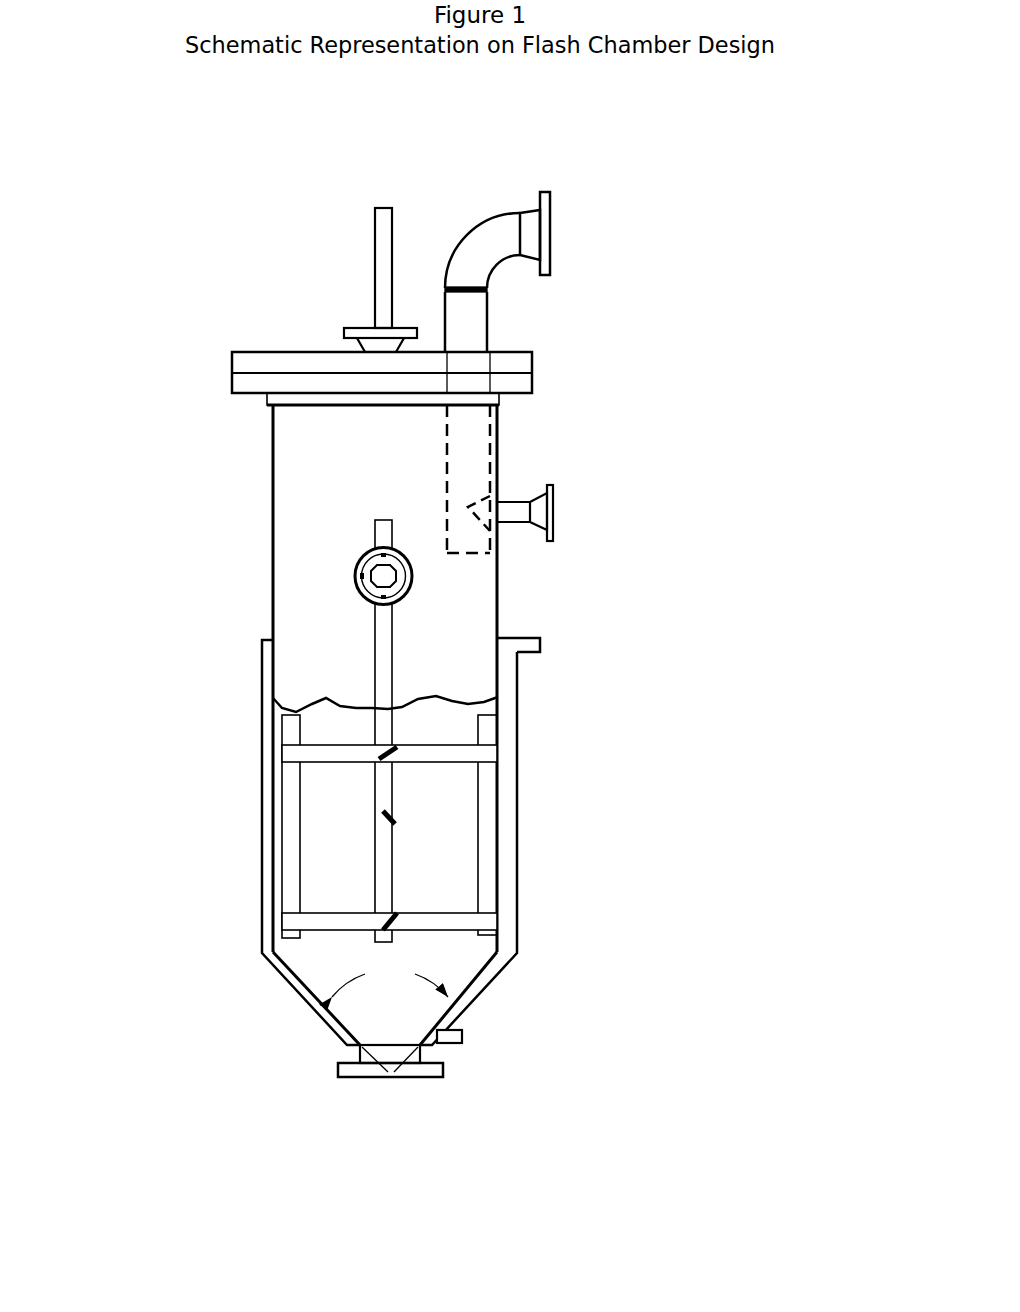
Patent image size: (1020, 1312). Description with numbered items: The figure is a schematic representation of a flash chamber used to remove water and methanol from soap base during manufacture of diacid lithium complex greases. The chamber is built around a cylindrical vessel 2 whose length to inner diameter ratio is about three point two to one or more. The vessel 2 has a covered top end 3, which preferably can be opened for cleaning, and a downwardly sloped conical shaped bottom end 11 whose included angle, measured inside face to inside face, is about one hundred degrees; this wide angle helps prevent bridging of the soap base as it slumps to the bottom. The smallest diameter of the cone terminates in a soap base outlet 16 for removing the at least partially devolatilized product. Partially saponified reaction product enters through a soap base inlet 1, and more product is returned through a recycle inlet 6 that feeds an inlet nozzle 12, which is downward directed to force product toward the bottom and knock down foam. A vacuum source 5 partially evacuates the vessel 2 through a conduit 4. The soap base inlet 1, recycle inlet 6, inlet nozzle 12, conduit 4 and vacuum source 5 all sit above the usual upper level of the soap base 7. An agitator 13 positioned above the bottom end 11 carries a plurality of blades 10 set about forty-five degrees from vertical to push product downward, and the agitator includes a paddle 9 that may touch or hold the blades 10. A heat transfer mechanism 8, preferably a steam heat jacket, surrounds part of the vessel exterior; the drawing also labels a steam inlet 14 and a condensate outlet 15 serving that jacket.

The soap base inlet 1 is at (397, 577).
The cylindrical vessel 2 is at (322, 613).
The covered top end 3 is at (400, 382).
The conduit 4 is at (465, 450).
The vacuum source 5 is at (550, 233).
The recycle inlet 6 is at (556, 512).
The upper level of the soap base 7 is at (327, 698).
The heat transfer mechanism 8 is at (508, 892).
The paddle 9 is at (333, 922).
The blades 10 is at (390, 921).
The conical shaped bottom end 11 is at (362, 1015).
The inlet nozzle 12 is at (460, 505).
The agitator 13 is at (378, 290).
The steam inlet 14 is at (542, 645).
The condensate outlet 15 is at (462, 1037).
The soap base outlet 16 is at (391, 1077).